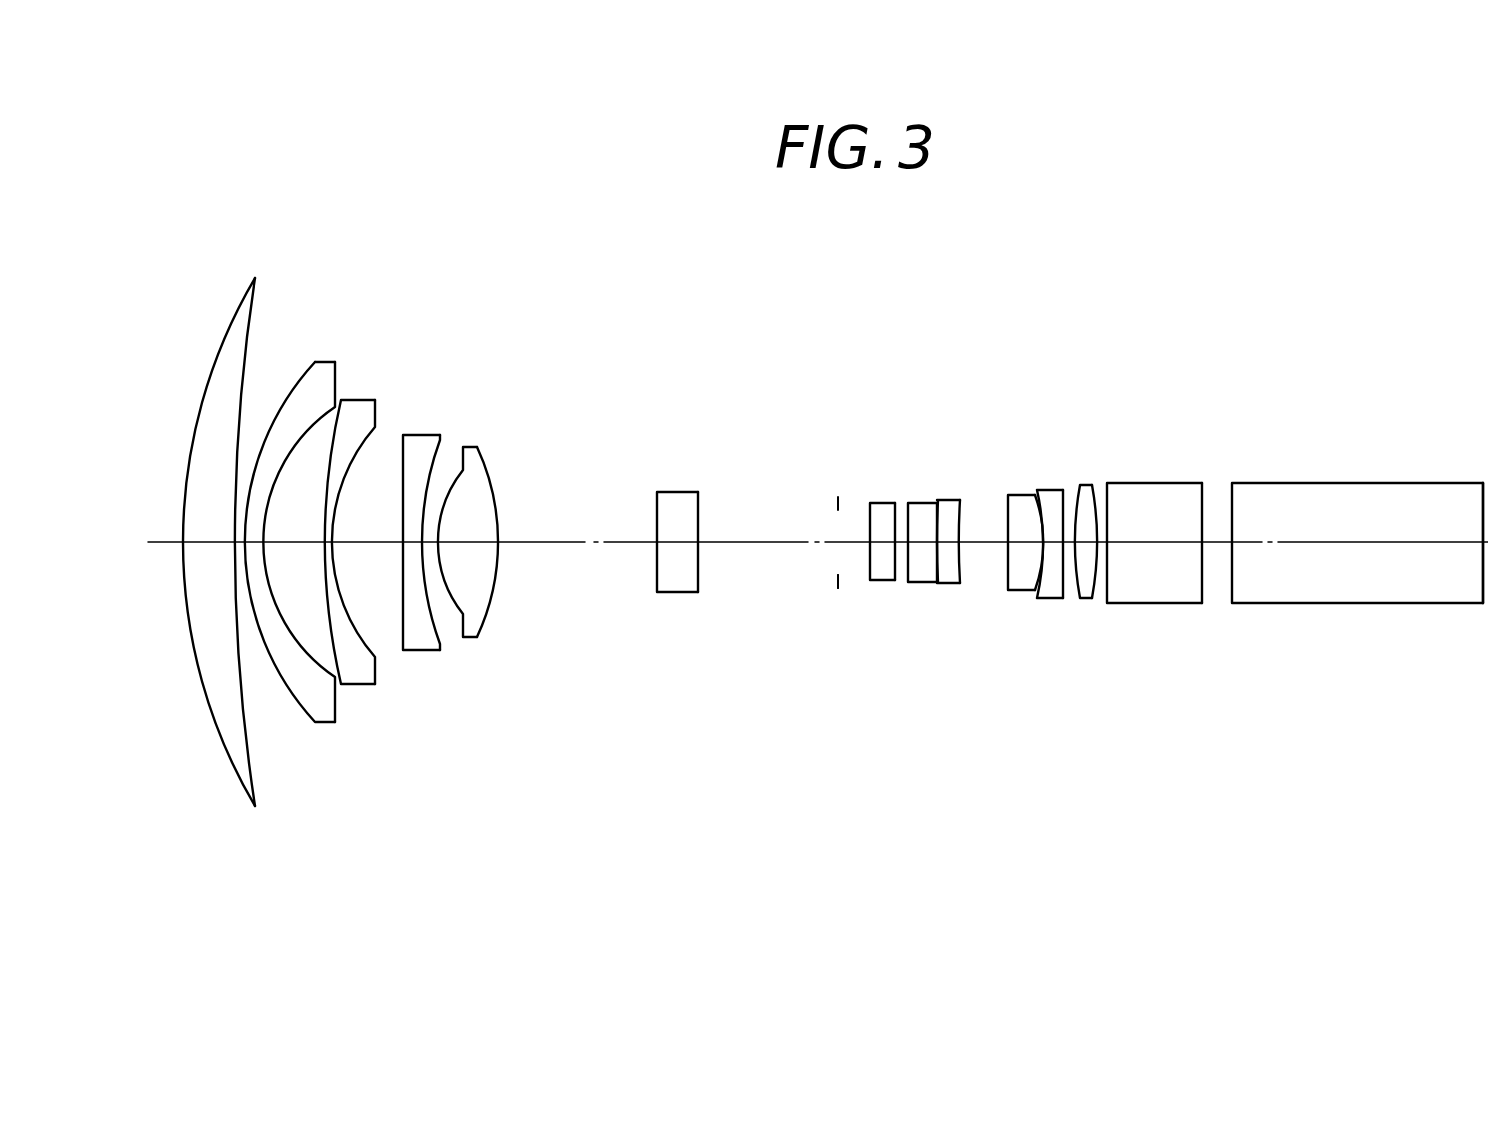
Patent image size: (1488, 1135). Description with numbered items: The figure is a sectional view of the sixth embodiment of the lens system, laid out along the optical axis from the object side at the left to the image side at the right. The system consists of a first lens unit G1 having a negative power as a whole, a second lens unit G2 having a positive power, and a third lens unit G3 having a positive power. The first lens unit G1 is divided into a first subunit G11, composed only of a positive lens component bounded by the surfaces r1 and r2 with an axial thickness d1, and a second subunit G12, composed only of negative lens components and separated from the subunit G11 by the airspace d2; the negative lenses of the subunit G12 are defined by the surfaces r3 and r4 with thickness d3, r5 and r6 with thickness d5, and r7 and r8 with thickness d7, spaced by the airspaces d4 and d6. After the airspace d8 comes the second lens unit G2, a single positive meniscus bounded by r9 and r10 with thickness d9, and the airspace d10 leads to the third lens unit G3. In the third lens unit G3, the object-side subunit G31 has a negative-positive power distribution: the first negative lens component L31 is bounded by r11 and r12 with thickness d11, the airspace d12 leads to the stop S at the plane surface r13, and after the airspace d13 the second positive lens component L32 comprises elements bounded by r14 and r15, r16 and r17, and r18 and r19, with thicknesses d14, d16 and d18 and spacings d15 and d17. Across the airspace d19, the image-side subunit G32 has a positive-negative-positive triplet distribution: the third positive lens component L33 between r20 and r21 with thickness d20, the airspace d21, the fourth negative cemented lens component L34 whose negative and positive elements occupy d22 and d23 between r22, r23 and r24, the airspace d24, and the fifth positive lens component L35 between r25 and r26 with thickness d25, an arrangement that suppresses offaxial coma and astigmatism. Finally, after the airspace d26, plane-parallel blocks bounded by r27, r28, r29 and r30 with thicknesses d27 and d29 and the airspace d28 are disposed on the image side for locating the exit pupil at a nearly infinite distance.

The radius of curvature of first surface r1 is at (234, 318).
The radius of curvature of second surface r2 is at (256, 323).
The radius of curvature of third surface r3 is at (297, 382).
The radius of curvature of fourth surface r4 is at (316, 422).
The radius of curvature of fifth surface r5 is at (340, 427).
The radius of curvature of sixth surface r6 is at (363, 433).
The radius of curvature of seventh surface r7 is at (404, 448).
The radius of curvature of eighth surface r8 is at (430, 470).
The radius of curvature of ninth surface r9 is at (466, 463).
The radius of curvature of tenth surface r10 is at (499, 473).
The radius of curvature of eleventh surface r11 is at (655, 503).
The radius of curvature of twelfth surface r12 is at (702, 508).
The stop surface r13 is at (837, 503).
The radius of curvature of fourteenth surface r14 is at (868, 508).
The radius of curvature of fifteenth surface r15 is at (891, 505).
The radius of curvature of sixteenth surface r16 is at (906, 505).
The radius of curvature of seventeenth surface r17 is at (932, 503).
The radius of curvature of eighteenth surface r18 is at (942, 500).
The radius of curvature of nineteenth surface r19 is at (963, 500).
The radius of curvature of twentieth surface r20 is at (1007, 502).
The radius of curvature of twenty-first surface r21 is at (1030, 503).
The radius of curvature of twenty-second surface r22 is at (1050, 503).
The radius of curvature of twenty-third surface r23 is at (1053, 490).
The radius of curvature of twenty-fourth surface r24 is at (1077, 485).
The radius of curvature of twenty-fifth surface r25 is at (1083, 487).
The radius of curvature of twenty-sixth surface r26 is at (1095, 487).
The radius of curvature of twenty-seventh surface r27 is at (1107, 505).
The radius of curvature of twenty-eighth surface r28 is at (1201, 503).
The radius of curvature of twenty-ninth surface r29 is at (1233, 505).
The radius of curvature of thirtieth surface r30 is at (1483, 505).
The first axial thickness d1 is at (205, 545).
The second axial airspace d2 is at (250, 545).
The third axial thickness d3 is at (258, 541).
The fourth axial airspace d4 is at (297, 545).
The fifth axial thickness d5 is at (333, 547).
The sixth axial airspace d6 is at (377, 547).
The seventh axial thickness d7 is at (411, 547).
The eighth axial airspace d8 is at (447, 547).
The ninth axial thickness d9 is at (494, 547).
The tenth axial airspace d10 is at (572, 545).
The eleventh axial thickness d11 is at (673, 545).
The twelfth axial airspace d12 is at (755, 545).
The thirteenth axial airspace d13 is at (847, 547).
The fourteenth axial thickness d14 is at (882, 547).
The fifteenth axial airspace d15 is at (901, 547).
The sixteenth axial thickness d16 is at (922, 547).
The seventeenth axial airspace d17 is at (944, 547).
The eighteenth axial thickness d18 is at (957, 547).
The nineteenth axial airspace d19 is at (980, 547).
The twentieth axial thickness d20 is at (1012, 547).
The twenty-first axial airspace d21 is at (1039, 547).
The twenty-second axial thickness d22 is at (1053, 547).
The twenty-third axial thickness d23 is at (1068, 547).
The twenty-fourth axial airspace d24 is at (1085, 547).
The twenty-fifth axial thickness d25 is at (1092, 547).
The twenty-sixth axial airspace d26 is at (1101, 547).
The twenty-seventh axial thickness d27 is at (1152, 547).
The twenty-eighth axial airspace d28 is at (1217, 547).
The twenty-ninth axial thickness d29 is at (1387, 547).
The stop S is at (837, 582).
The first lens unit G1 is at (443, 201).
The second lens unit G2 is at (522, 296).
The third lens unit G3 is at (1105, 292).
The 1-1 subunit G11 is at (237, 822).
The 1-2 subunit G12 is at (443, 822).
The 3-1 subunit G31 is at (960, 867).
The 3-2 subunit G32 is at (1112, 867).
The first lens component L31 is at (710, 822).
The second lens component L32 is at (962, 822).
The third lens component L33 is at (1040, 822).
The fourth lens component L34 is at (1075, 822).
The fifth lens component L35 is at (1103, 822).